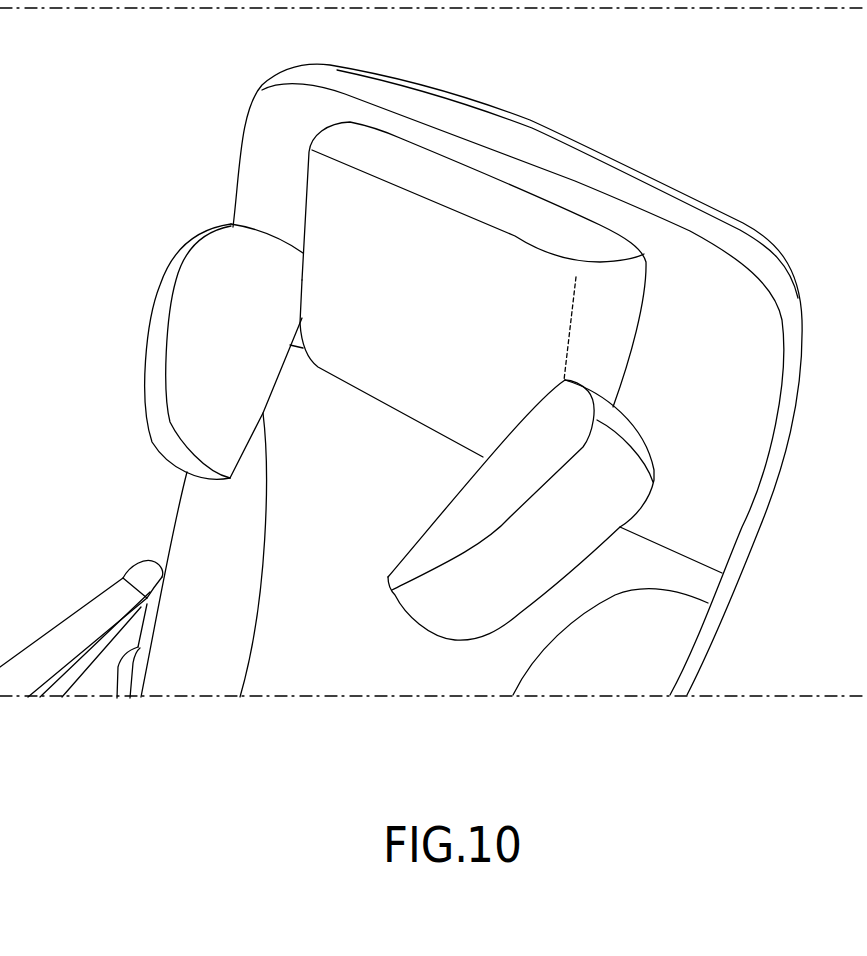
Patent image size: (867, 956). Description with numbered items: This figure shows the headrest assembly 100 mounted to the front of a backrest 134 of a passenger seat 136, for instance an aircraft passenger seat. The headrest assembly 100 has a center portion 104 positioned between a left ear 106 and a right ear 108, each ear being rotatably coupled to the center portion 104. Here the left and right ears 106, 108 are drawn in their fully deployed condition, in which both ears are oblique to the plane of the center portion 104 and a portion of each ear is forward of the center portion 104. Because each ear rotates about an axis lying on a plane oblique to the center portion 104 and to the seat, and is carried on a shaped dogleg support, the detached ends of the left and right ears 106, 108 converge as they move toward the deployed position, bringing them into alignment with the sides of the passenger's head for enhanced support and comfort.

The headrest assembly 100 is at (298, 119).
The center portion 104 is at (477, 180).
The left ear 106 is at (207, 262).
The right ear 108 is at (635, 470).
The backrest 134 is at (687, 247).
The passenger seat 136 is at (620, 155).